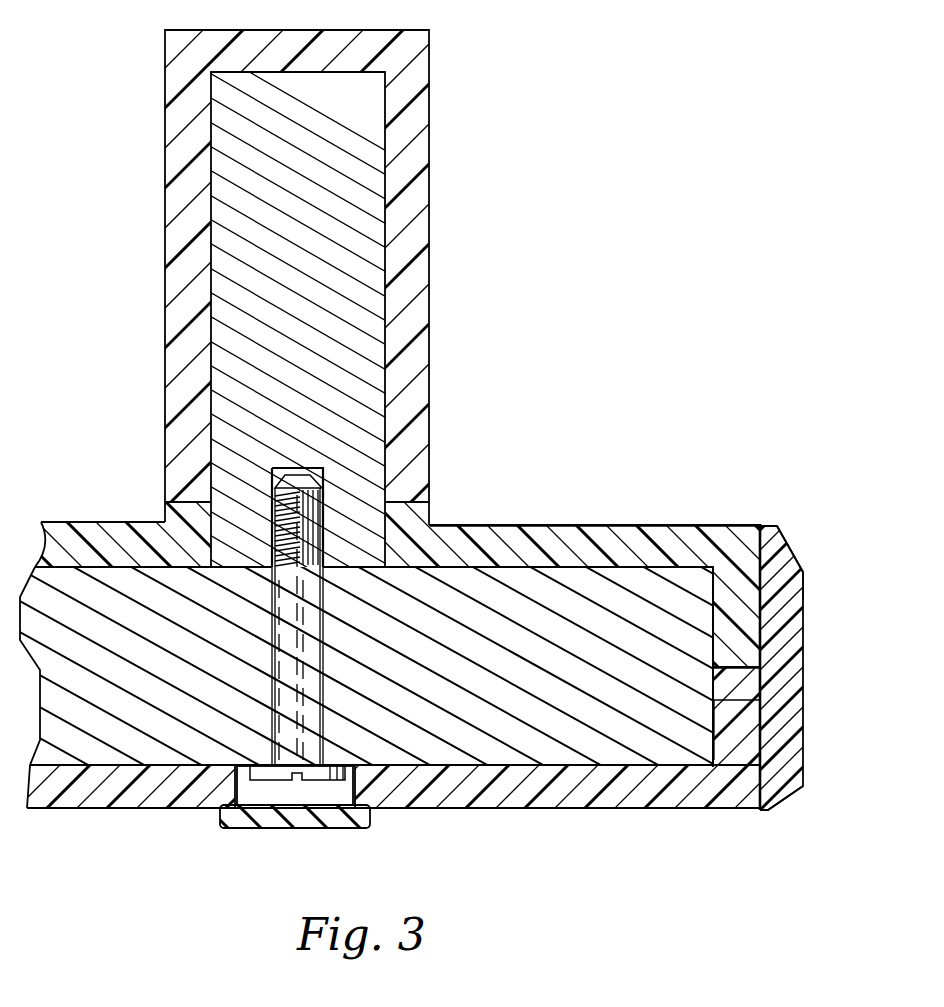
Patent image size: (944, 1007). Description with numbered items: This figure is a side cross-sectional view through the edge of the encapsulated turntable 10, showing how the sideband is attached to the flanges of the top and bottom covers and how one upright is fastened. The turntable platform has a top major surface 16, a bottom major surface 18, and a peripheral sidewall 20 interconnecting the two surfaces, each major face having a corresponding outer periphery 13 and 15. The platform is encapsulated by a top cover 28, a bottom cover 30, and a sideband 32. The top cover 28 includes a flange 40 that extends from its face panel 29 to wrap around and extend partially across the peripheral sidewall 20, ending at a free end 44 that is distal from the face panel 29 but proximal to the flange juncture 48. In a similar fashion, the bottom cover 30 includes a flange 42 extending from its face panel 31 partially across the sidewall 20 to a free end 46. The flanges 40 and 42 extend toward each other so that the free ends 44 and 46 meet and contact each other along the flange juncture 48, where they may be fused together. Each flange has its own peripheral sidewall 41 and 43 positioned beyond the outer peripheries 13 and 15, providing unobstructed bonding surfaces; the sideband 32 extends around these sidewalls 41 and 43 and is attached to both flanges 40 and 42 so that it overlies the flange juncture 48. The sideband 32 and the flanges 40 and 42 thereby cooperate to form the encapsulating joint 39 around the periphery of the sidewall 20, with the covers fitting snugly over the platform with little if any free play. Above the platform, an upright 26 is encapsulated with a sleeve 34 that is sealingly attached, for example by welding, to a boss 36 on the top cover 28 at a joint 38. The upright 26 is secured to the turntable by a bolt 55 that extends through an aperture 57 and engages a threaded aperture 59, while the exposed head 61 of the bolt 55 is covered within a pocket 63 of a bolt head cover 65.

The encapsulated turntable 10 is at (571, 348).
The outer periphery 13 is at (718, 577).
The outer periphery 15 is at (710, 733).
The top major surface 16 is at (605, 565).
The bottom major surface 18 is at (403, 770).
The peripheral sidewall 20 is at (767, 543).
The upright 26 is at (365, 252).
The top cover 28 is at (82, 537).
The face panel 29 is at (676, 545).
The bottom cover 30 is at (120, 802).
The face panel 31 is at (678, 785).
The sideband 32 is at (787, 652).
The sleeve 34 is at (176, 333).
The boss 36 is at (183, 512).
The joint 38 is at (386, 523).
The encapsulating joint 39 is at (745, 730).
The flange 40 is at (743, 600).
The peripheral sidewall 41 is at (777, 562).
The flange 42 is at (797, 780).
The peripheral sidewall 43 is at (790, 788).
The free end 44 is at (762, 643).
The free end 46 is at (743, 701).
The flange juncture 48 is at (750, 690).
The bolt 55 is at (278, 722).
The aperture 57 is at (318, 722).
The threaded aperture 59 is at (322, 515).
The exposed head 61 is at (325, 778).
The pocket 63 is at (267, 793).
The bolt head cover 65 is at (248, 818).